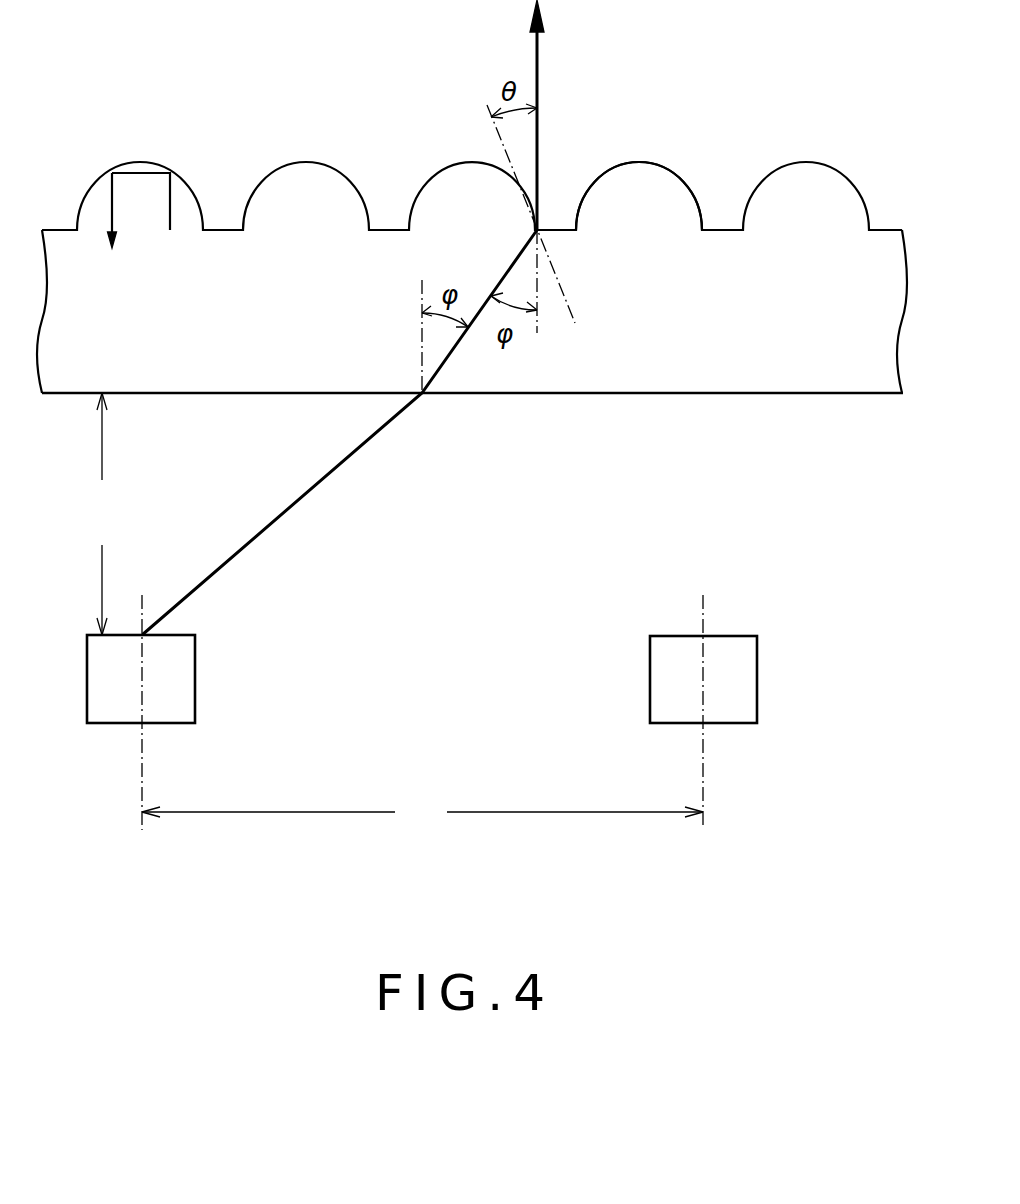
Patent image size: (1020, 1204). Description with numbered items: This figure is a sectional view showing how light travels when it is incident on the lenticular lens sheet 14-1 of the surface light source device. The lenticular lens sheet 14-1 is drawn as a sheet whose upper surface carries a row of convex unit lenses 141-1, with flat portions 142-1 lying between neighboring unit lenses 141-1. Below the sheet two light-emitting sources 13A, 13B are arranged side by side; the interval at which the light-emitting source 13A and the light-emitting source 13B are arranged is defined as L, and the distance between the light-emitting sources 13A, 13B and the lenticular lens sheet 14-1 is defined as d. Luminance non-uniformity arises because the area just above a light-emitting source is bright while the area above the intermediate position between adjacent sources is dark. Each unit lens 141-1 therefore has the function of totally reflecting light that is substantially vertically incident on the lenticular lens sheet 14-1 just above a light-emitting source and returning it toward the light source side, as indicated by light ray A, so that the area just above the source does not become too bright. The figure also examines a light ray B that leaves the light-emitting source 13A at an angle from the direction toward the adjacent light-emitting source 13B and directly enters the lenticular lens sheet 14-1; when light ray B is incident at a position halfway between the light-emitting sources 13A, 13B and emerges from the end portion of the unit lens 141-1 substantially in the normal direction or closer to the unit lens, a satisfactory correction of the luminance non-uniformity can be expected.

The light-emitting source 13A is at (196, 677).
The light-emitting source 13B is at (758, 677).
The lenticular lens sheet 14-1 is at (720, 357).
The unit lens 141-1 is at (640, 183).
The flat portion 142-1 is at (567, 232).
The light ray A is at (172, 200).
The light ray B is at (275, 525).
The distance d is at (102, 514).
The interval L is at (422, 814).